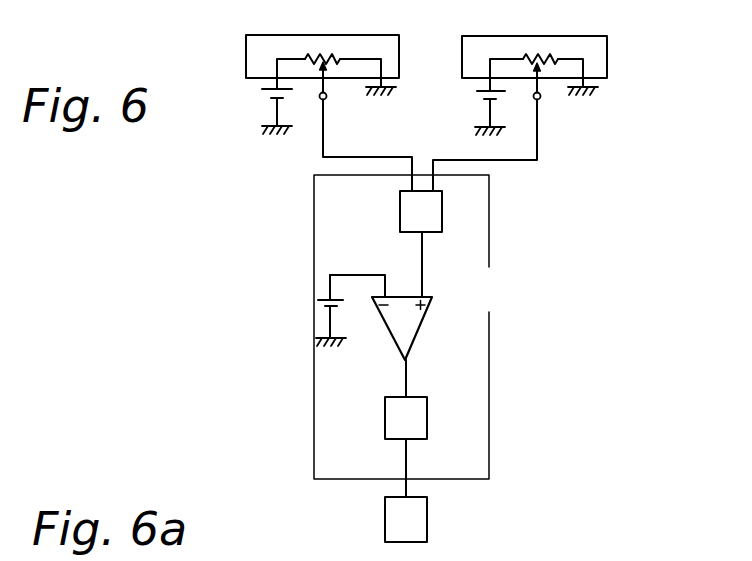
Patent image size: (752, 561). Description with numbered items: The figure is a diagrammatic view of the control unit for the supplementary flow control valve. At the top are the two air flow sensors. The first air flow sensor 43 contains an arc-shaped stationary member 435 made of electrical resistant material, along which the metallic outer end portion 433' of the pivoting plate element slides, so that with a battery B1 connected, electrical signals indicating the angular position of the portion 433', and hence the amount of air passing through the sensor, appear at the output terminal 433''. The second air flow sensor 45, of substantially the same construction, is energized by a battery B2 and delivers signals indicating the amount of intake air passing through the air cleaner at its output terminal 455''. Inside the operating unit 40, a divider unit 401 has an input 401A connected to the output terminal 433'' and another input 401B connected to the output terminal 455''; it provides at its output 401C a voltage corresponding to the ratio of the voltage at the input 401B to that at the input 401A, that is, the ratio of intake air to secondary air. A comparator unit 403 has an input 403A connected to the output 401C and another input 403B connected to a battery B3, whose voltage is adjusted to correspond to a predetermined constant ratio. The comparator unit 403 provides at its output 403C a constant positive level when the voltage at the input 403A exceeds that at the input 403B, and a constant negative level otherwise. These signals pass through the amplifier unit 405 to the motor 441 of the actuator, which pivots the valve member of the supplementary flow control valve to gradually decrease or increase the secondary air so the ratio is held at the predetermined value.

The first air flow sensor 43 is at (245, 59).
The stationary member 435 is at (332, 55).
The outer end portion 433' is at (387, 60).
The output terminal 433'' is at (357, 104).
The battery B1 is at (265, 97).
The second air flow sensor 45 is at (553, 36).
The output terminal 455'' is at (573, 104).
The battery B2 is at (481, 95).
The input 401A is at (411, 163).
The input 401B is at (487, 163).
The divider unit 401 is at (442, 222).
The output 401C is at (422, 248).
The input 403A is at (422, 285).
The input 403B is at (385, 290).
The battery B3 is at (325, 302).
The comparator unit 403 is at (415, 337).
The output 403C is at (407, 376).
The operating unit 40 is at (489, 383).
The amplifier unit 405 is at (427, 425).
The motor 441 is at (427, 522).